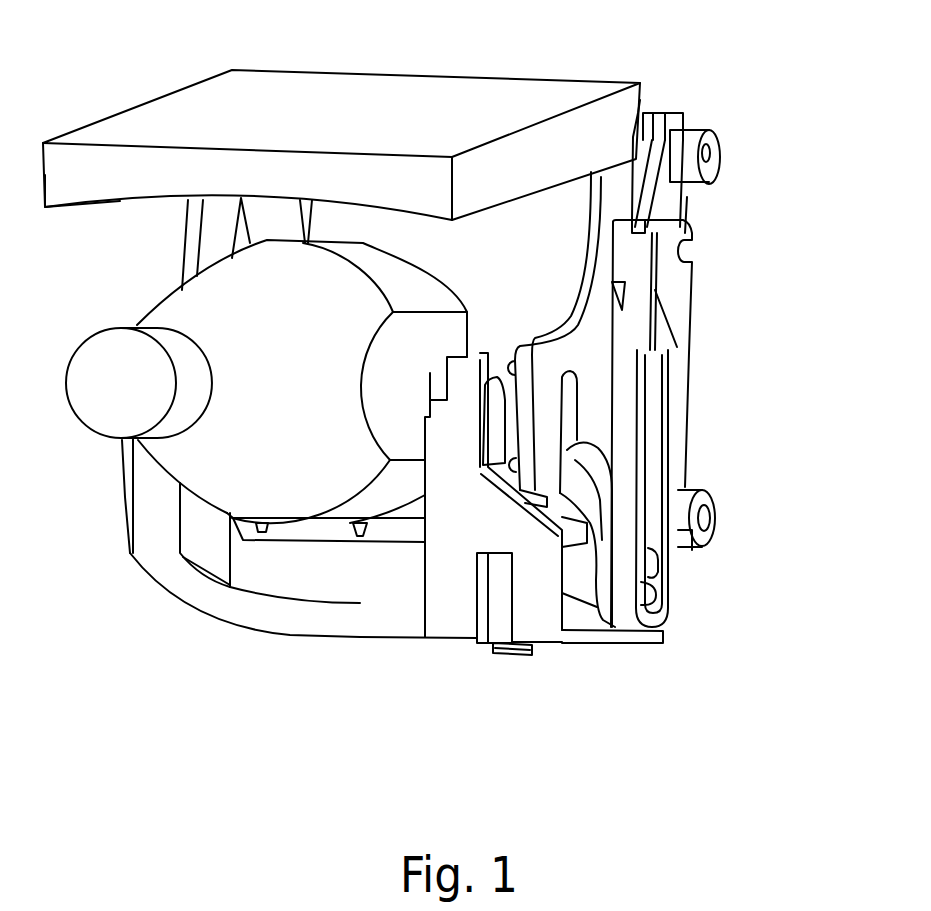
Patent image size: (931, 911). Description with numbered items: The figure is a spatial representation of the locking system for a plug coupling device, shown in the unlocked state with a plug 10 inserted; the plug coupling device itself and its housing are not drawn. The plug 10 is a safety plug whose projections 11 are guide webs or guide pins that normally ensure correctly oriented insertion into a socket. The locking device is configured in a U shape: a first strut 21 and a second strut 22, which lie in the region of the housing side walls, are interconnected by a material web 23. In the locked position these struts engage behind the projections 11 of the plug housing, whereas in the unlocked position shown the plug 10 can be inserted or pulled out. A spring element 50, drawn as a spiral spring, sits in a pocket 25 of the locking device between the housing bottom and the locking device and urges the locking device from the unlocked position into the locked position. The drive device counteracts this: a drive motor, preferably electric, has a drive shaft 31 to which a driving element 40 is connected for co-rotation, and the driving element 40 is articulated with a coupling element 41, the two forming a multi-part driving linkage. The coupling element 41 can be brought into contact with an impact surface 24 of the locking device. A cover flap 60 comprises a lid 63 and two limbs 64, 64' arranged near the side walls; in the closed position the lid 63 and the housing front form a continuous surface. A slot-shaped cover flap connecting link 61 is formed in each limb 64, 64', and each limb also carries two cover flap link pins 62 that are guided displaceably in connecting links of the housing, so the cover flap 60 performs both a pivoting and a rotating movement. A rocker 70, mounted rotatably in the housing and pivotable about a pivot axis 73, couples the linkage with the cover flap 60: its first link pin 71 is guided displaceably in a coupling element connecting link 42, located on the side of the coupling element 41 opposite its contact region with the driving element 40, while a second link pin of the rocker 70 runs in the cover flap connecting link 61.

The plug 10 is at (175, 305).
The projections 11 is at (435, 377).
The first strut 21 is at (465, 380).
The second strut 22 is at (142, 523).
The material web 23 is at (275, 622).
The impact surface 24 is at (592, 618).
The pocket 25 is at (495, 620).
The drive shaft 31 is at (712, 155).
The driving element 40 is at (677, 205).
The coupling element 41 is at (673, 308).
The coupling element connecting link 42 is at (640, 587).
The spring element 50 is at (520, 657).
The cover flap 60 is at (258, 80).
The cover flap connecting link 61 is at (567, 407).
The cover flap link pins 62 is at (509, 367).
The lid 63 is at (64, 193).
The cover flap limb 64 is at (219, 244).
The cover flap limb 64' is at (562, 331).
The rocker 70 is at (593, 480).
The first link pin 71 is at (650, 560).
The pivot axis 73 is at (710, 515).